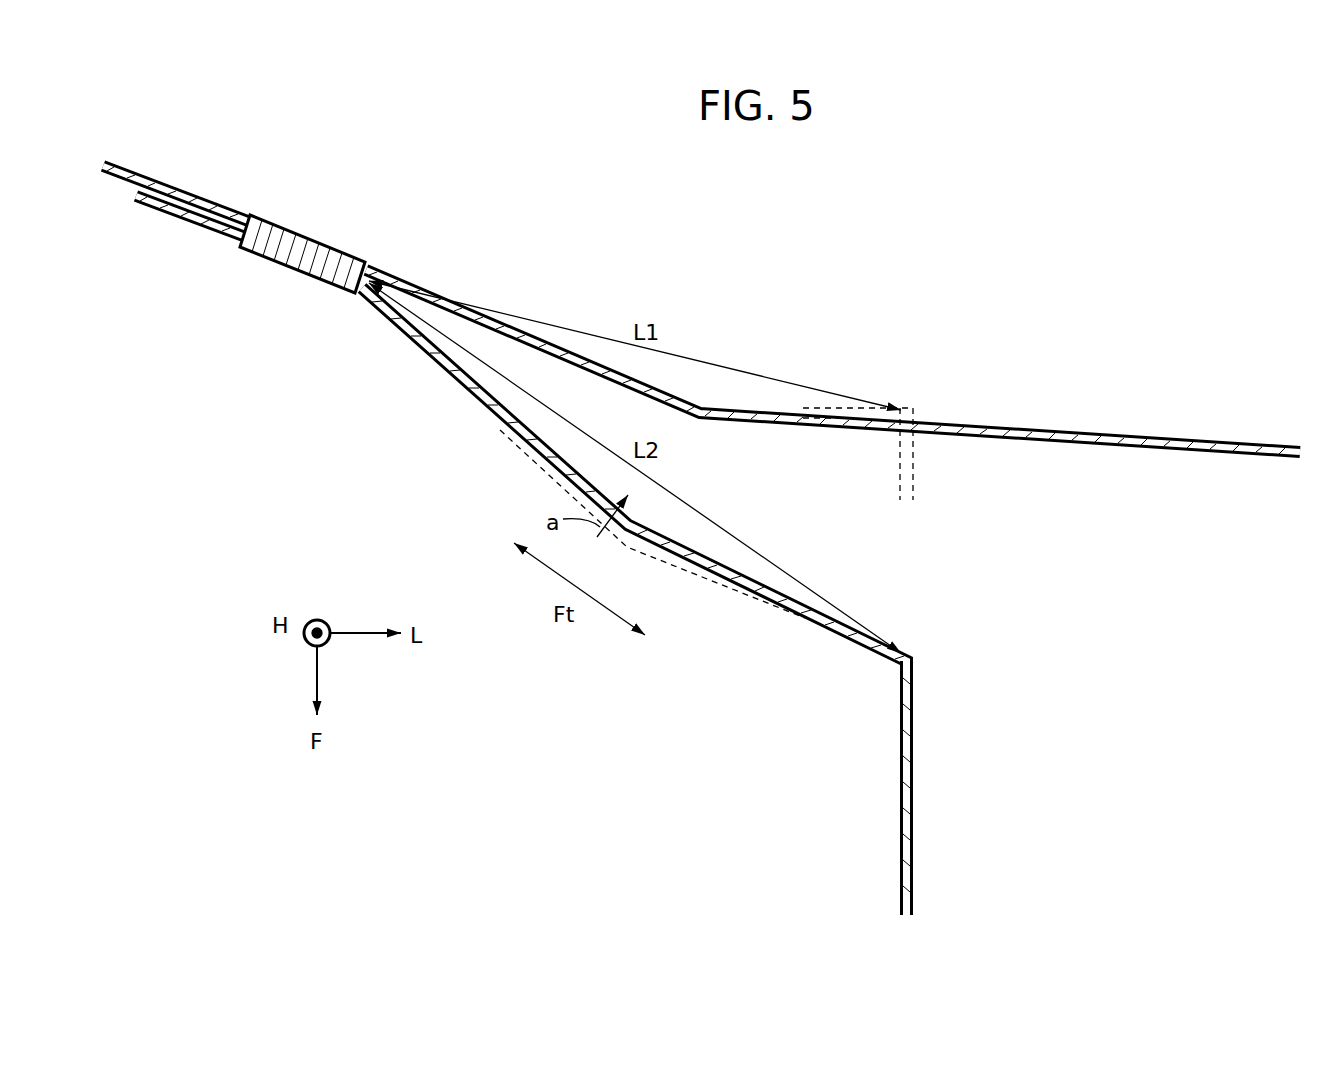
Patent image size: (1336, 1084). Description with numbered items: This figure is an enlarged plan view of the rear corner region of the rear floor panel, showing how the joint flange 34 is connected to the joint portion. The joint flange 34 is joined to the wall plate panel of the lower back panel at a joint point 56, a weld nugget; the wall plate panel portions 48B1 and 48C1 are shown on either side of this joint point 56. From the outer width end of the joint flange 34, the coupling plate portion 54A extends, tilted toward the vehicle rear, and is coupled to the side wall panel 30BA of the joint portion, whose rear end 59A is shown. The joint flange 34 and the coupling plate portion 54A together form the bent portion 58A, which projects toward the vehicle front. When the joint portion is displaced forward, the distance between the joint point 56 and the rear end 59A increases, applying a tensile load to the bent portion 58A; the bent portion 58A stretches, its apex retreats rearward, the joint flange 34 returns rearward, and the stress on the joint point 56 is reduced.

The first belt portion (shoulder belt) 48B1 is at (213, 212).
The joint point 56 is at (293, 240).
The second belt portion (lap belt) 48C1 is at (1138, 442).
The joint flange 34 is at (440, 360).
The coupling plate portion 54A is at (840, 630).
The bent portion 58A is at (620, 547).
The rear end of the joint portion 59A is at (913, 408).
The side wall panel 30BA is at (915, 802).